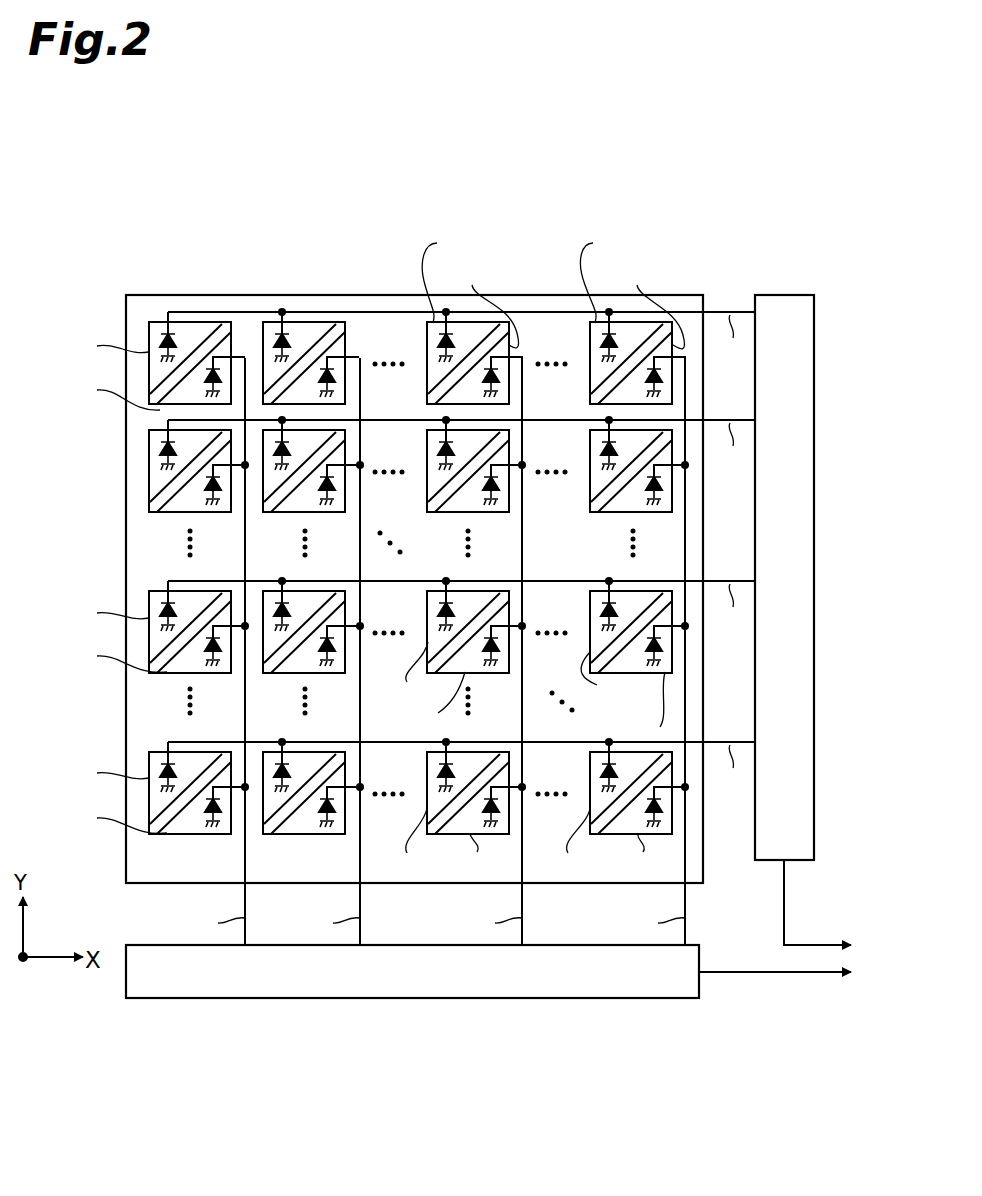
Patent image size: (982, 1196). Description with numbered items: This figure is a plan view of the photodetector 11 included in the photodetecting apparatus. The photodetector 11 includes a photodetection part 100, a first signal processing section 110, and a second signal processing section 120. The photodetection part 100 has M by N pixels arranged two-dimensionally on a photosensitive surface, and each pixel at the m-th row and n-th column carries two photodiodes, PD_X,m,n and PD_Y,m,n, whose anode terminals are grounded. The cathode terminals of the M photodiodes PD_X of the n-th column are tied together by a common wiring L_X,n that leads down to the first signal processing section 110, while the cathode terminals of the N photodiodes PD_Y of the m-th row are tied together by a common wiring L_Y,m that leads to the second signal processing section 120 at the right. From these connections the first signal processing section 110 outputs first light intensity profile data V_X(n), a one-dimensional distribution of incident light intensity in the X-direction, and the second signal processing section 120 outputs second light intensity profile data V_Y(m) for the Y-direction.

The photodetector 11 is at (366, 222).
The photodetection part 100 is at (233, 293).
The first signal processing section 110 is at (258, 998).
The second signal processing section 120 is at (785, 294).